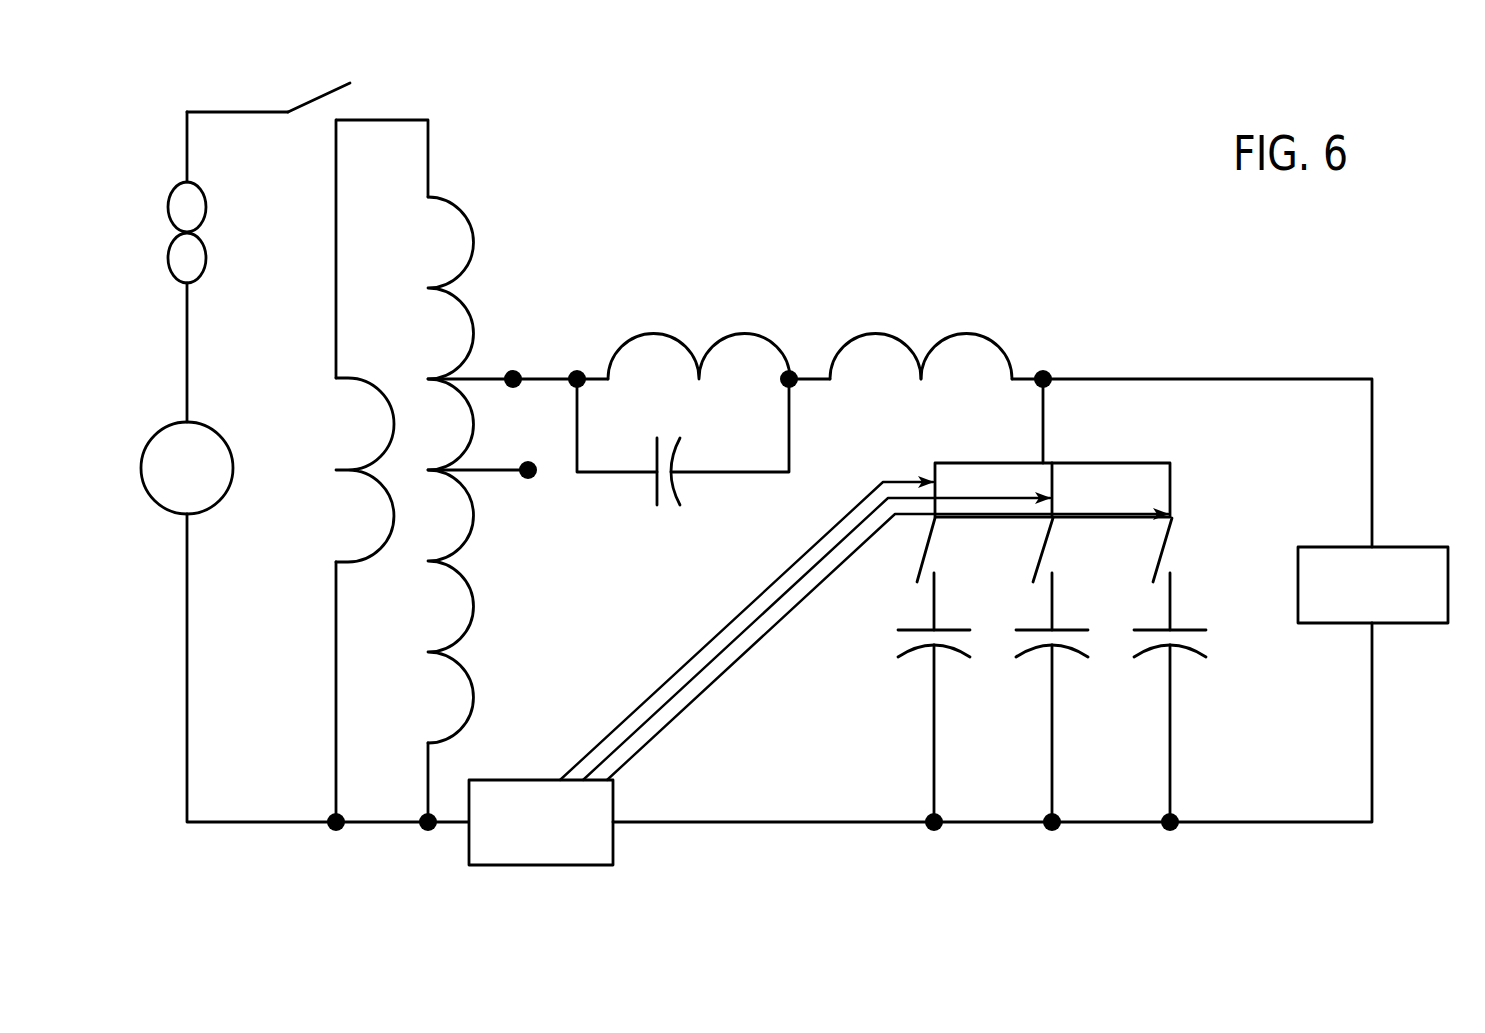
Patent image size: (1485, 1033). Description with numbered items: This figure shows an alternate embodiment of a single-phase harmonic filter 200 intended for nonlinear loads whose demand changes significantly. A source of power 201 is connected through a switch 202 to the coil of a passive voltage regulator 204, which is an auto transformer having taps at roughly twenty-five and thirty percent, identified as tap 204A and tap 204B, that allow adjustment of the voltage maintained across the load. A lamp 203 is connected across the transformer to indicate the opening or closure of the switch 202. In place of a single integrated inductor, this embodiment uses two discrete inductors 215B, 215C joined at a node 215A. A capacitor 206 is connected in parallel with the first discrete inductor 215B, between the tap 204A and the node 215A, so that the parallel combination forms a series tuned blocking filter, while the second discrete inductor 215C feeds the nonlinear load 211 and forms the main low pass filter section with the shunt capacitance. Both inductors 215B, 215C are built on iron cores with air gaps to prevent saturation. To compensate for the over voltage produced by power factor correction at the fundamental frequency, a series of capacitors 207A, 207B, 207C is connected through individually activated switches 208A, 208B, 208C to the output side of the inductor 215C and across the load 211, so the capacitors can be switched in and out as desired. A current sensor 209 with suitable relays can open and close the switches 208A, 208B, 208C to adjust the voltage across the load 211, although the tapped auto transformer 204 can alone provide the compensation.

The single-phase harmonic filter 200 is at (1023, 202).
The source of power 201 is at (210, 512).
The switch 202 is at (360, 101).
The lamp 203 is at (358, 380).
The passive voltage regulator 204 is at (473, 697).
The tap 204A is at (515, 370).
The tap 204B is at (530, 480).
The capacitor 206 is at (653, 492).
The capacitor 207A is at (915, 653).
The capacitor 207B is at (1037, 653).
The capacitor 207C is at (1155, 655).
The switch 208A is at (942, 555).
The switch 208B is at (1064, 555).
The switch 208C is at (1180, 555).
The current sensor 209 is at (615, 800).
The nonlinear load 211 is at (1405, 547).
The node 215A is at (815, 377).
The discrete inductor 215B is at (728, 330).
The discrete inductor 215C is at (950, 333).